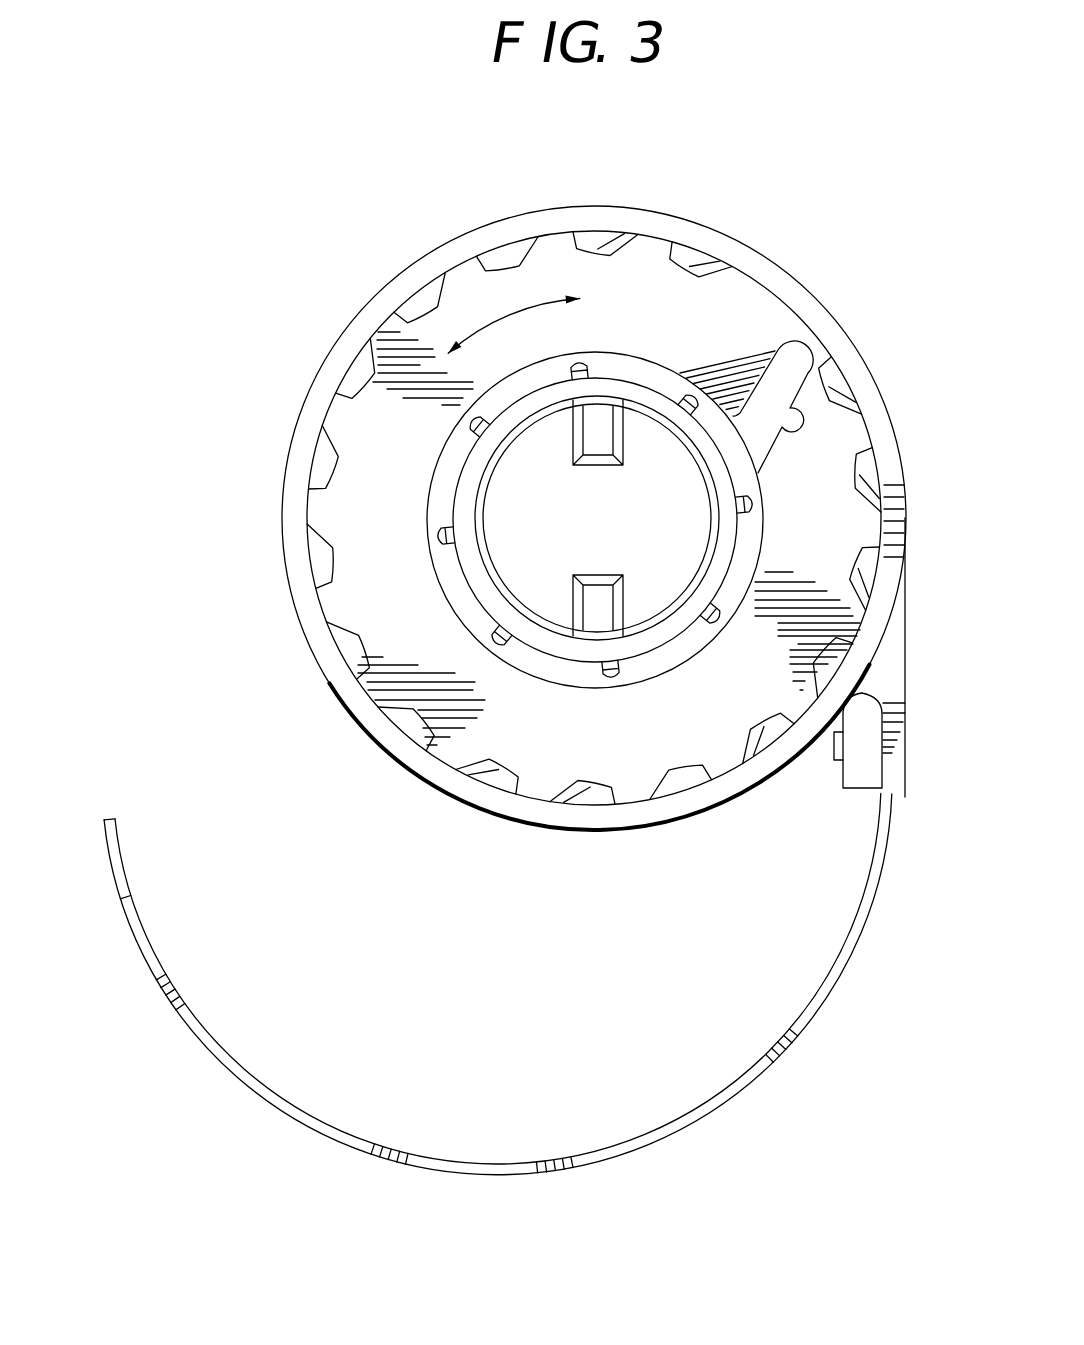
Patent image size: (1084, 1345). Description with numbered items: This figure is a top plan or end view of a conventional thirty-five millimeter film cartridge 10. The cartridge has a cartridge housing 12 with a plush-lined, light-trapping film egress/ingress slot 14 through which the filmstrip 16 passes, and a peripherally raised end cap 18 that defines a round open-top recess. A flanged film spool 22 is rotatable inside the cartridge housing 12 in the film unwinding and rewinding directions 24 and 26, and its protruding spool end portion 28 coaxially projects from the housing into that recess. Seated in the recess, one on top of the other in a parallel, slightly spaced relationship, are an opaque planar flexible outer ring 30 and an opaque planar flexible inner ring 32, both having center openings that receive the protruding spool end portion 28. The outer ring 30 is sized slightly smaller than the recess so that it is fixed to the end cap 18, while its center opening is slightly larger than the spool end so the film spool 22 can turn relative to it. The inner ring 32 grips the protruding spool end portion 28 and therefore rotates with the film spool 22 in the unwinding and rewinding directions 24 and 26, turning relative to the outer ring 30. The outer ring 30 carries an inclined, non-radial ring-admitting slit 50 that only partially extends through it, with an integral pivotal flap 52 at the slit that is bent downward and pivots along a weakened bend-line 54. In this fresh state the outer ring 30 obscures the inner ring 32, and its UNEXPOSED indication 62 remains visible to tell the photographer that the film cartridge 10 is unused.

The film cartridge 10 is at (585, 494).
The cartridge housing 12 is at (347, 220).
The film egress/ingress slot 14 is at (904, 798).
The filmstrip 16 is at (665, 1132).
The end cap 18 is at (345, 673).
The film spool 22 is at (558, 520).
The film unwinding direction 24 is at (600, 300).
The film rewinding direction 26 is at (441, 343).
The protruding spool end portion 28 is at (470, 510).
The outer ring 30 is at (594, 555).
The inner ring 32 is at (457, 598).
The ring-admitting slit 50 is at (782, 430).
The pivotal flap 52 is at (735, 413).
The weakened bend-line 54 is at (713, 378).
The UNEXPOSED indication 62 is at (672, 774).